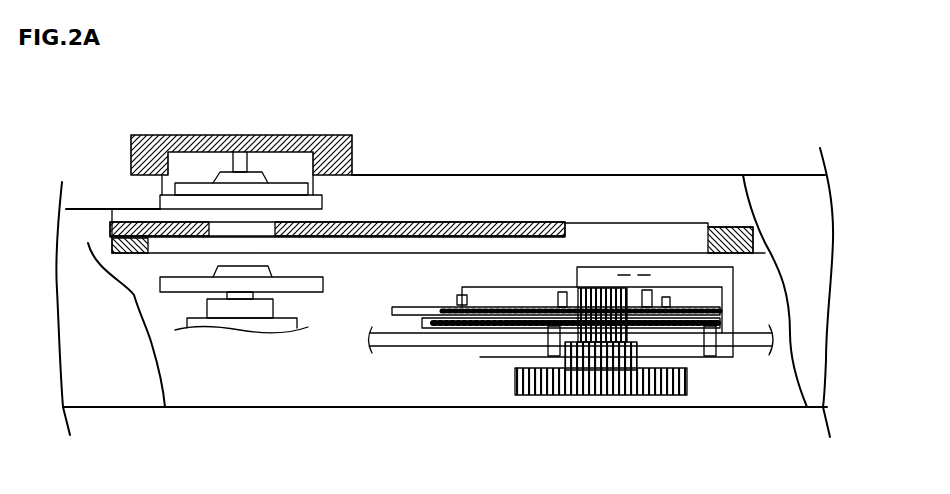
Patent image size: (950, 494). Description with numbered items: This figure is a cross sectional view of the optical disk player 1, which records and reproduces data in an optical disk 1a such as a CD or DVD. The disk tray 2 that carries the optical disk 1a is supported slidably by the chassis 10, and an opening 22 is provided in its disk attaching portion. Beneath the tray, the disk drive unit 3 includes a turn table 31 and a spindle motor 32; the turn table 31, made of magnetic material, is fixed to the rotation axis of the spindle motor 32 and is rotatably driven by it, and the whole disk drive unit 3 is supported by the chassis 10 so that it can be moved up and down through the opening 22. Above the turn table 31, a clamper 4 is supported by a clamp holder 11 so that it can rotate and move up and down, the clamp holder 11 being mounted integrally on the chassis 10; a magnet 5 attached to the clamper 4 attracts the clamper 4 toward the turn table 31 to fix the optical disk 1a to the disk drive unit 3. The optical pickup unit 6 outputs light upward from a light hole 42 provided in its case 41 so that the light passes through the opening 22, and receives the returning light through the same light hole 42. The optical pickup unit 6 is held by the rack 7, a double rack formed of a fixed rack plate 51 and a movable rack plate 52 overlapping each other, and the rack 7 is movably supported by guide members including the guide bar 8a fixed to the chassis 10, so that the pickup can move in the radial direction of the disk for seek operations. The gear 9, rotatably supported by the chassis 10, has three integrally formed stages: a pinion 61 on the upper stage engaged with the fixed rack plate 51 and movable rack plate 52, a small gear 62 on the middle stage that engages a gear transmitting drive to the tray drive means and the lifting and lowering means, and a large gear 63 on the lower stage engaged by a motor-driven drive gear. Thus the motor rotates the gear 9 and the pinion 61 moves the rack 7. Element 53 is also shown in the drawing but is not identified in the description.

The optical disk player 1 is at (442, 88).
The optical disk 1a is at (387, 223).
The disk tray 2 is at (682, 218).
The disk drive unit 3 is at (220, 329).
The clamper 4 is at (200, 202).
The magnet 5 is at (283, 190).
The optical pickup unit 6 is at (740, 296).
The rack 7 is at (413, 320).
The guide bar 8a is at (500, 338).
The gear 9 is at (625, 371).
The chassis 10 is at (88, 243).
The clamp holder 11 is at (140, 152).
The opening 22 is at (338, 243).
The turn table 31 is at (287, 285).
The spindle motor 32 is at (237, 312).
The case 41 is at (673, 277).
The light hole 42 is at (628, 262).
The fixed rack plate 51 is at (432, 330).
The movable rack plate 52 is at (433, 310).
The guide post 53 is at (585, 288).
The pinion 61 is at (622, 343).
The small gear 62 is at (600, 333).
The large gear 63 is at (548, 382).